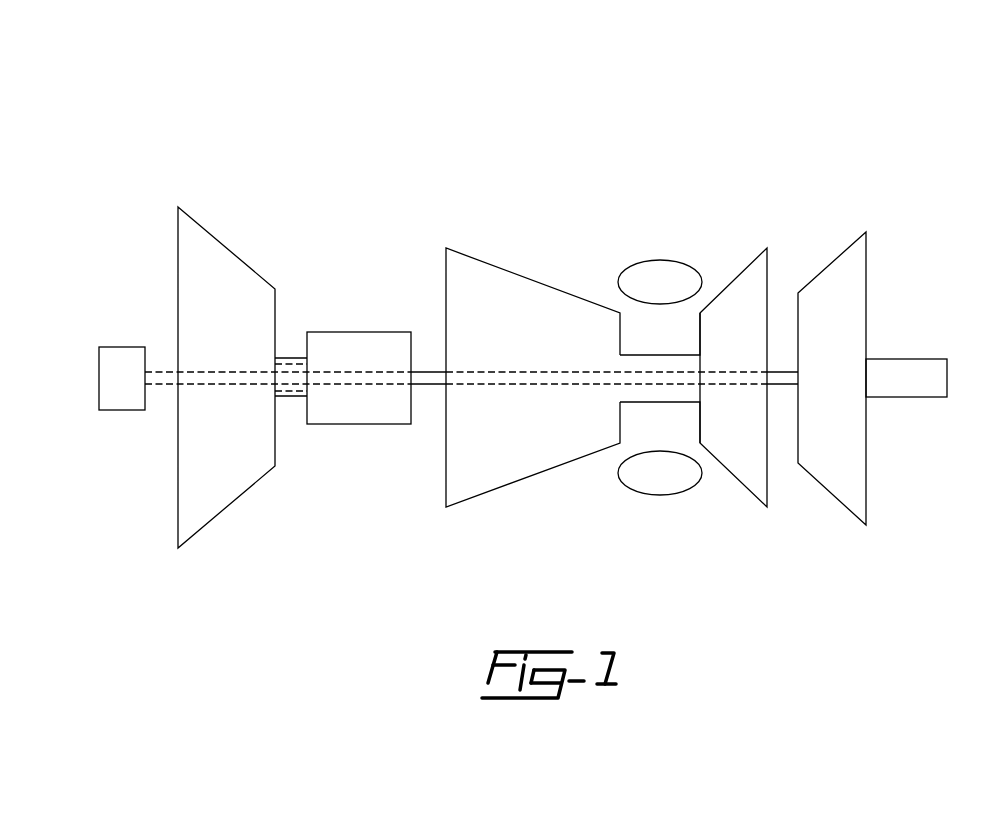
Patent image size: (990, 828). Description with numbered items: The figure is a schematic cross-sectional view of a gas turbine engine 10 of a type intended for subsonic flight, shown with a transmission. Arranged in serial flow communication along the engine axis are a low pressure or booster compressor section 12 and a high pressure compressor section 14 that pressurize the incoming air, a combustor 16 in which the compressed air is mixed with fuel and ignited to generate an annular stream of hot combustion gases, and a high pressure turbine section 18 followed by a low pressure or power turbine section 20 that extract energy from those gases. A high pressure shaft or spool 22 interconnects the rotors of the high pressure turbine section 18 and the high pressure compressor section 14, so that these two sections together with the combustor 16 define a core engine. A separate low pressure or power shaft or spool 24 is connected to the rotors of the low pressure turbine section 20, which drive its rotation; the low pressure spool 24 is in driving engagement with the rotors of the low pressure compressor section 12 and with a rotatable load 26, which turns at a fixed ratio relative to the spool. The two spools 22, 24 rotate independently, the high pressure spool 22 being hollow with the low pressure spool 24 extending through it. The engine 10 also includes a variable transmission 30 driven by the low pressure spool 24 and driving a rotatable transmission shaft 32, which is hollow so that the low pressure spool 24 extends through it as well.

The gas turbine engine 10 is at (487, 148).
The low pressure compressor section 12 is at (232, 218).
The high pressure compressor section 14 is at (527, 265).
The combustor 16 is at (667, 250).
The high pressure turbine section 18 is at (745, 250).
The low pressure turbine section 20 is at (877, 238).
The high pressure spool 22 is at (670, 402).
The low pressure spool 24 is at (782, 385).
The rotatable load 26 is at (123, 400).
The variable transmission 30 is at (356, 315).
The transmission shaft 32 is at (291, 398).